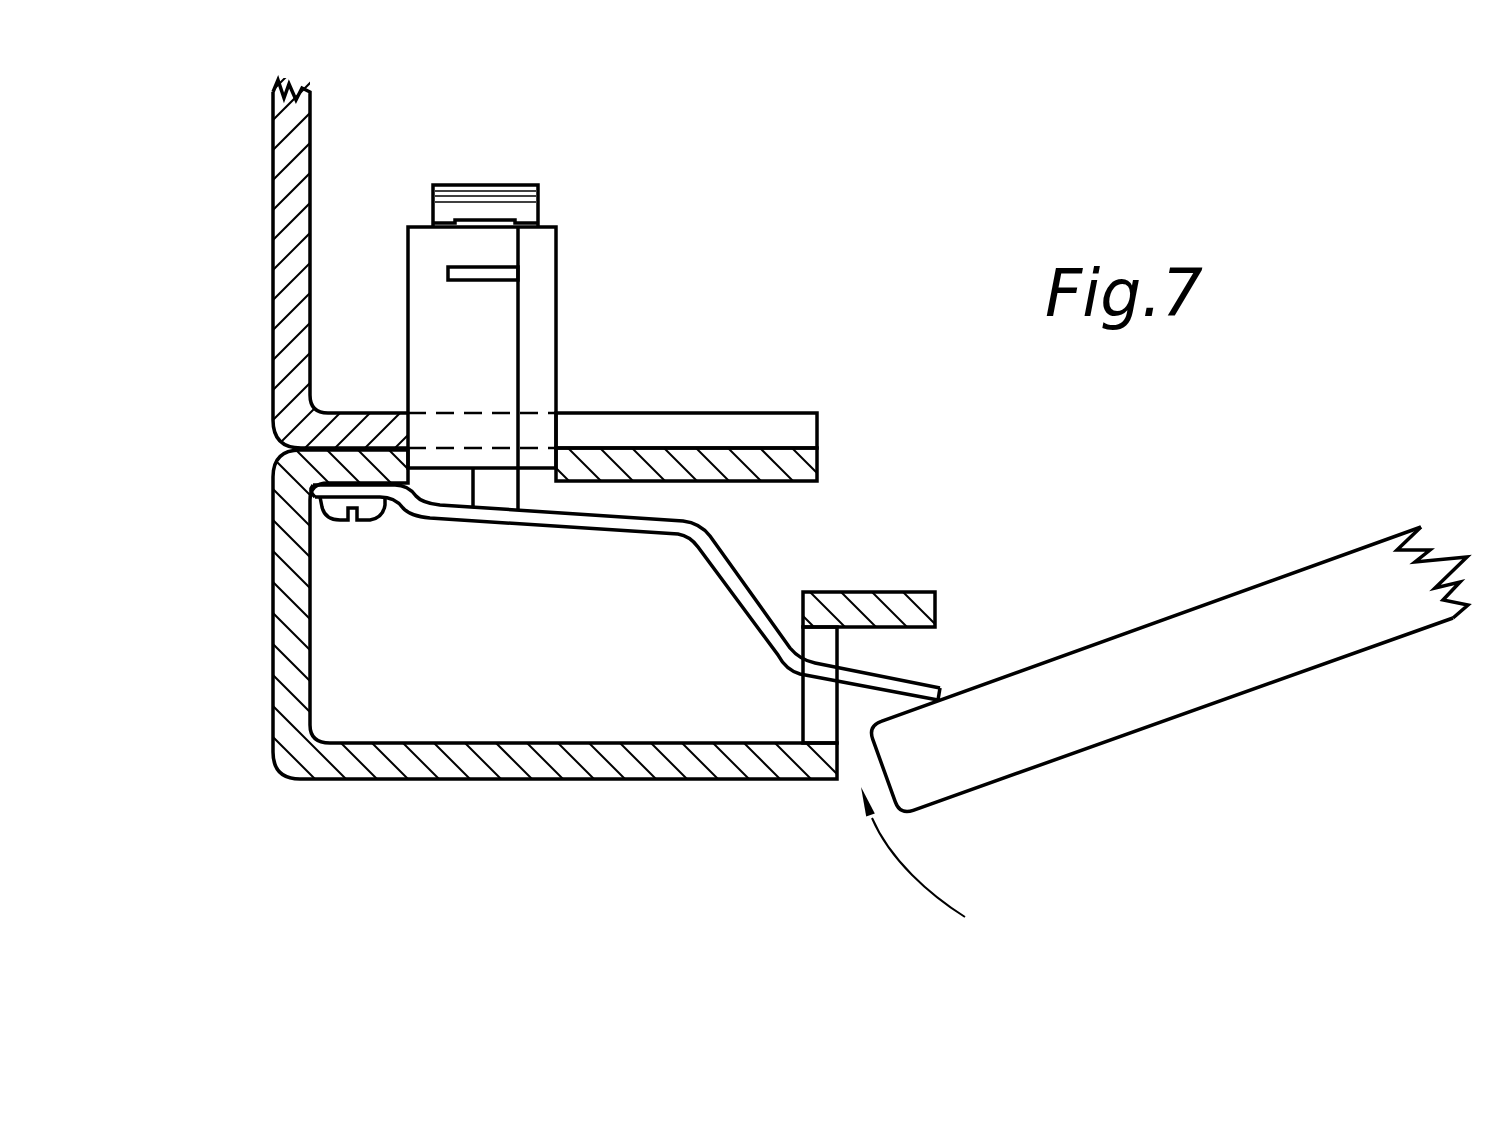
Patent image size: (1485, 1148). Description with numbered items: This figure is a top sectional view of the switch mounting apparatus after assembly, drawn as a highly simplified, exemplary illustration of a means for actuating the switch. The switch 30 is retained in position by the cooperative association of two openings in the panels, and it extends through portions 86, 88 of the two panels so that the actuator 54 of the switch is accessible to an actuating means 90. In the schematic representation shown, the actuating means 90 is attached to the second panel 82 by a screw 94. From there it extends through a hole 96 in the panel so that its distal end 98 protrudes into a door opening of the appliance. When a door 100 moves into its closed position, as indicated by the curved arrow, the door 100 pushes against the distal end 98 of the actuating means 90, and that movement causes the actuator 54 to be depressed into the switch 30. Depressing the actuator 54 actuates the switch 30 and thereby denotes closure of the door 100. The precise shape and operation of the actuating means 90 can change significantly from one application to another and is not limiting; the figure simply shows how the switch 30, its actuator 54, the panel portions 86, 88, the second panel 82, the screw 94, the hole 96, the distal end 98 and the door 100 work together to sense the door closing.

The switch 30 is at (542, 278).
The actuator 54 is at (500, 492).
The second panel 82 is at (497, 759).
The portion of panel 86 is at (725, 468).
The portion of panel 88 is at (672, 425).
The actuating means 90 is at (740, 607).
The screw 94 is at (337, 512).
The hole 96 is at (817, 647).
The distal end 98 is at (927, 687).
The door 100 is at (1183, 676).